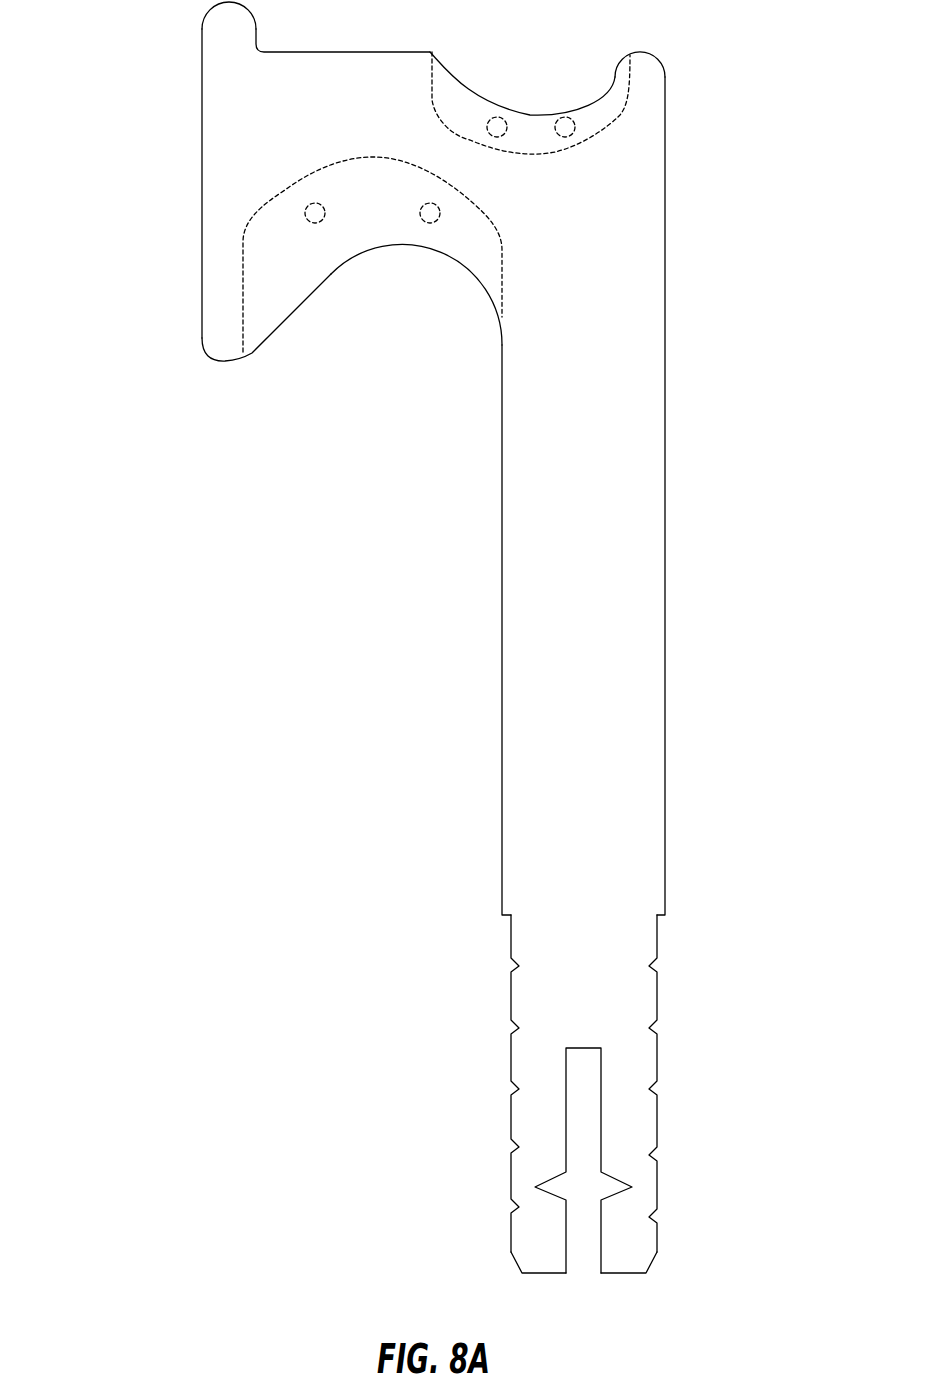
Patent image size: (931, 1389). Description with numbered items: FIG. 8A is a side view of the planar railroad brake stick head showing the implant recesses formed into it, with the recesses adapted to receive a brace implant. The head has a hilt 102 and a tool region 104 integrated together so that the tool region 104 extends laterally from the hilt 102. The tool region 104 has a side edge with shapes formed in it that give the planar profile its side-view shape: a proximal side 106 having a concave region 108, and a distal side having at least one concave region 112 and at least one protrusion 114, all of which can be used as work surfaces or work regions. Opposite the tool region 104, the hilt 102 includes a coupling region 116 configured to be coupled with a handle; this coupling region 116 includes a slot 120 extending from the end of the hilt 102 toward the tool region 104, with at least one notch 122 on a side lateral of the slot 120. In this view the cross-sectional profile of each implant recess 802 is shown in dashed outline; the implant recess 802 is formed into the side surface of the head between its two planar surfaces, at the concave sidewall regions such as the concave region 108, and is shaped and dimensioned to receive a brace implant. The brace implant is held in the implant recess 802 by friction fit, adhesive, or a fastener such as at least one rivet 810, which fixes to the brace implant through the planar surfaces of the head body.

The hilt 102 is at (681, 495).
The tool region 104 is at (183, 255).
The proximal side 106 is at (258, 362).
The concave region 108 is at (410, 258).
The concave region 112 is at (530, 112).
The protrusion 114 is at (230, 40).
The coupling region 116 is at (673, 1260).
The slot 120 is at (585, 1271).
The notch 122 is at (508, 965).
The implant recess 802 is at (302, 250).
The rivet 810 is at (305, 210).